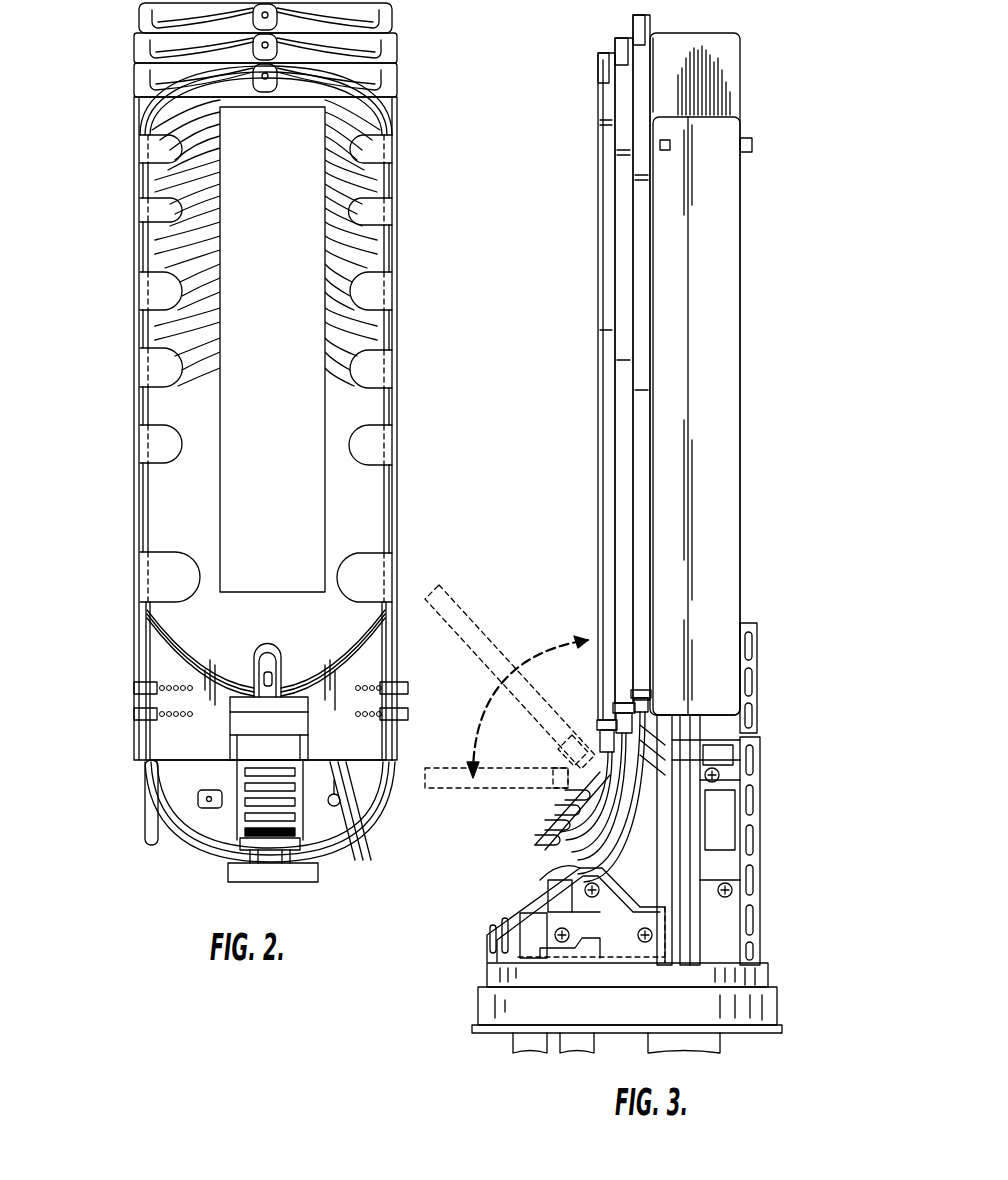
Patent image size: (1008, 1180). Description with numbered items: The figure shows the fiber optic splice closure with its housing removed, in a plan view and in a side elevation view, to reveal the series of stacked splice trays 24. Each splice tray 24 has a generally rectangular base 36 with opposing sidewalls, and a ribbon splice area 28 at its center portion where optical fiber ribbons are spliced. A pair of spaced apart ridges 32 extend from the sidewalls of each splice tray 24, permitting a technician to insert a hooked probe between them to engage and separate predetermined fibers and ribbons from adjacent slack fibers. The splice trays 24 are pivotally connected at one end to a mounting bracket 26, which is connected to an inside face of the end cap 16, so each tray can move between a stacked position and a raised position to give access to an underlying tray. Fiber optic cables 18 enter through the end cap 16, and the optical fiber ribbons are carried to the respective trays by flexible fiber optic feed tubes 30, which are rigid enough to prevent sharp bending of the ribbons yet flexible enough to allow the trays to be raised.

In FIG. 3, the end cap 16 is at (500, 1035).
In FIG. 3, the fiber optic cable 18 is at (695, 878).
In FIG. 2, the splice tray 24 is at (385, 65).
In FIG. 3, the splice tray 24 is at (618, 46).
In FIG. 3, the mounting bracket 26 is at (620, 797).
In FIG. 2, the ribbon splice area 28 is at (312, 425).
In FIG. 2, the fiber optic feed tube 30 is at (172, 778).
In FIG. 3, the fiber optic feed tube 30 is at (608, 866).
In FIG. 2, the ridges 32 is at (138, 187).
In FIG. 2, the base 36 is at (190, 623).